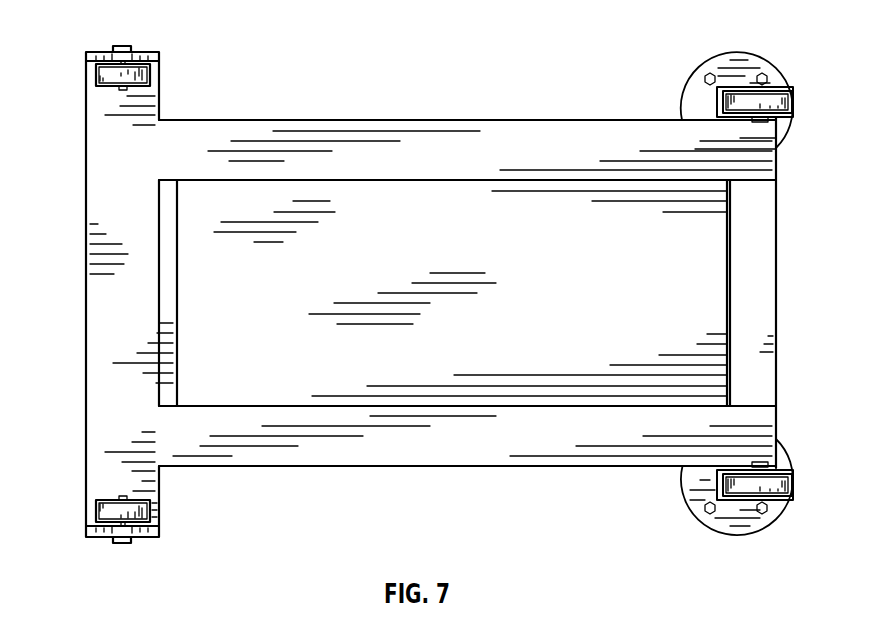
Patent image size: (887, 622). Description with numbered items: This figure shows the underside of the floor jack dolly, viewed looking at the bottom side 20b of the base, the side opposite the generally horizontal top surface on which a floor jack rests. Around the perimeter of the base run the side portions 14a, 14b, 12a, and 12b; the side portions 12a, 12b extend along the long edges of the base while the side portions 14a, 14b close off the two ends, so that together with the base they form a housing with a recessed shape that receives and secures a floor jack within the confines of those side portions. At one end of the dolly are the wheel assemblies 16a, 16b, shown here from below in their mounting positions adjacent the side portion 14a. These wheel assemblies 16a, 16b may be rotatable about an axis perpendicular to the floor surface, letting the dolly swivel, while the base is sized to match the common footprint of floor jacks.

The side portion 12a is at (388, 458).
The side portion 12b is at (552, 133).
The side portion 14a is at (772, 267).
The side portion 14b is at (97, 313).
The wheel assembly 16a is at (772, 55).
The wheel assembly 16b is at (772, 533).
The bottom side of base 20b is at (606, 303).